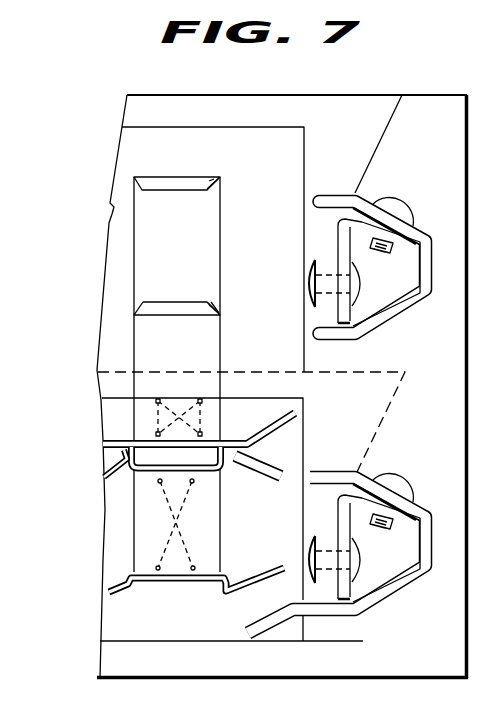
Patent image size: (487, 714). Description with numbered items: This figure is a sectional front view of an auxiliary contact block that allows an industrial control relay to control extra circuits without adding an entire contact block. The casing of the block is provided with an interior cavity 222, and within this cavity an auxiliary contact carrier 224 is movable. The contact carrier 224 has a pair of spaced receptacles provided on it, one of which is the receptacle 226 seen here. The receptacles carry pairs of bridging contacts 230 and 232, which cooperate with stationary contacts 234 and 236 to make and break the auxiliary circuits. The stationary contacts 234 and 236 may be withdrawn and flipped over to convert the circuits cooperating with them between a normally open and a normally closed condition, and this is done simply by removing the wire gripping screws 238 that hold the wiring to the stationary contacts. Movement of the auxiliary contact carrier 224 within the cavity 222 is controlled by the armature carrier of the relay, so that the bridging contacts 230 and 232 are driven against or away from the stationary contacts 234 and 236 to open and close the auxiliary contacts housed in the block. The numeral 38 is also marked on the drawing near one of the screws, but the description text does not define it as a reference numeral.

The interior cavity 222 is at (257, 150).
The receptacle 226 is at (202, 268).
The auxiliary contact carrier 224 is at (207, 348).
The bolt 38 is at (405, 204).
The stationary contact 236 is at (380, 321).
The wire gripping screw 238 is at (418, 466).
The stationary contact 234 is at (383, 605).
The bridging contacts 230 is at (106, 486).
The bridging contacts 232 is at (108, 562).